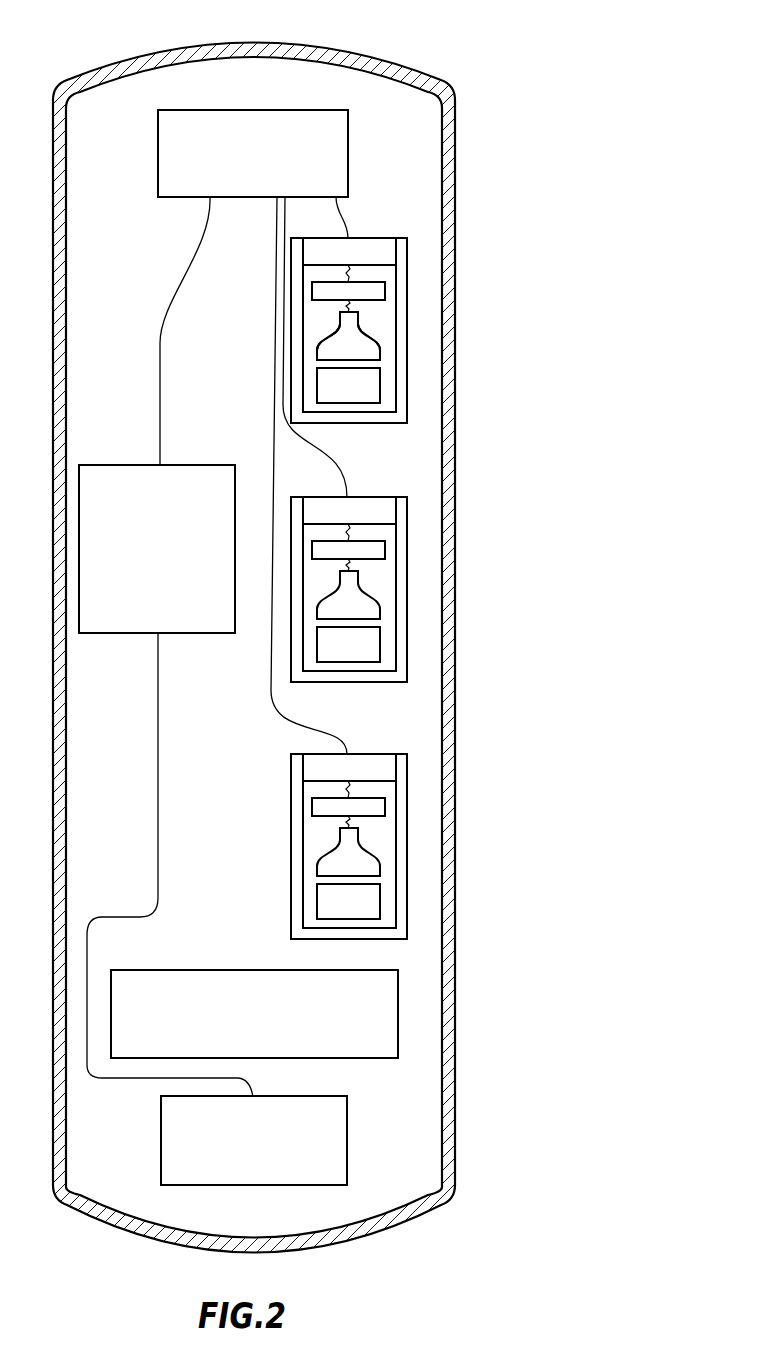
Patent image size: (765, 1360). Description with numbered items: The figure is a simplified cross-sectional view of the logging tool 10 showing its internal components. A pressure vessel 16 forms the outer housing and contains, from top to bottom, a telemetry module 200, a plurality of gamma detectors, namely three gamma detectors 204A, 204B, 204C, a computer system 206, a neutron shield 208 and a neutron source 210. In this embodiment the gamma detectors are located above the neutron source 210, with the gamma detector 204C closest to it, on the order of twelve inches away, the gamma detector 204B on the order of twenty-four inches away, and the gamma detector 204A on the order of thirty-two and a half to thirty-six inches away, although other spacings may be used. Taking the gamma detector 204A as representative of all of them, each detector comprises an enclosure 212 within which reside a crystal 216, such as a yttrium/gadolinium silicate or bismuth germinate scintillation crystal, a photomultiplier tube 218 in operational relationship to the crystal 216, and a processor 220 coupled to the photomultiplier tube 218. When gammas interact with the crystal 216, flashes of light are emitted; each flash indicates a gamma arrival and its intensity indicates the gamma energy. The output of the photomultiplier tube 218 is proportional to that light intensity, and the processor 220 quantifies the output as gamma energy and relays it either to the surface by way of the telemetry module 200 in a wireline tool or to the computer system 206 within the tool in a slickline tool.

The logging tool 10 is at (582, 88).
The pressure vessel 16 is at (455, 217).
The telemetry module 200 is at (180, 198).
The gamma detector 204A is at (407, 307).
The gamma detector 204B is at (407, 549).
The gamma detector 204C is at (407, 810).
The computer system 206 is at (180, 591).
The neutron shield 208 is at (398, 1002).
The neutron source 210 is at (347, 1123).
The enclosure 212 is at (400, 262).
The crystal 216 is at (372, 385).
The photomultiplier tube 218 is at (380, 353).
The processor 220 is at (312, 287).